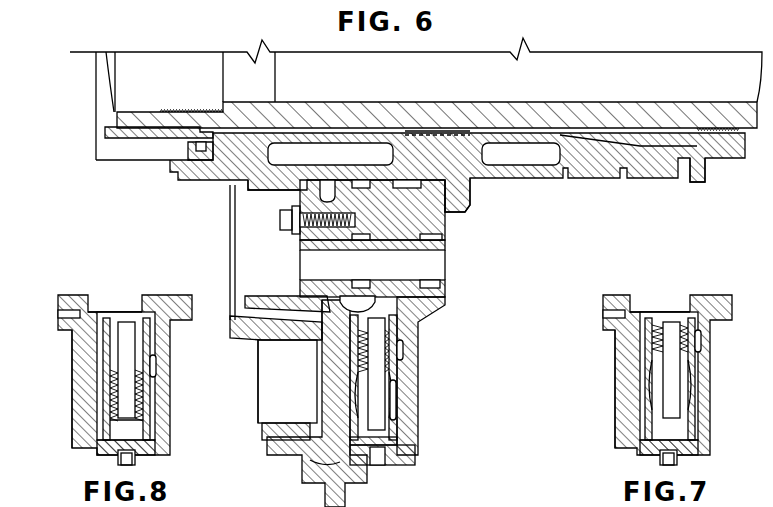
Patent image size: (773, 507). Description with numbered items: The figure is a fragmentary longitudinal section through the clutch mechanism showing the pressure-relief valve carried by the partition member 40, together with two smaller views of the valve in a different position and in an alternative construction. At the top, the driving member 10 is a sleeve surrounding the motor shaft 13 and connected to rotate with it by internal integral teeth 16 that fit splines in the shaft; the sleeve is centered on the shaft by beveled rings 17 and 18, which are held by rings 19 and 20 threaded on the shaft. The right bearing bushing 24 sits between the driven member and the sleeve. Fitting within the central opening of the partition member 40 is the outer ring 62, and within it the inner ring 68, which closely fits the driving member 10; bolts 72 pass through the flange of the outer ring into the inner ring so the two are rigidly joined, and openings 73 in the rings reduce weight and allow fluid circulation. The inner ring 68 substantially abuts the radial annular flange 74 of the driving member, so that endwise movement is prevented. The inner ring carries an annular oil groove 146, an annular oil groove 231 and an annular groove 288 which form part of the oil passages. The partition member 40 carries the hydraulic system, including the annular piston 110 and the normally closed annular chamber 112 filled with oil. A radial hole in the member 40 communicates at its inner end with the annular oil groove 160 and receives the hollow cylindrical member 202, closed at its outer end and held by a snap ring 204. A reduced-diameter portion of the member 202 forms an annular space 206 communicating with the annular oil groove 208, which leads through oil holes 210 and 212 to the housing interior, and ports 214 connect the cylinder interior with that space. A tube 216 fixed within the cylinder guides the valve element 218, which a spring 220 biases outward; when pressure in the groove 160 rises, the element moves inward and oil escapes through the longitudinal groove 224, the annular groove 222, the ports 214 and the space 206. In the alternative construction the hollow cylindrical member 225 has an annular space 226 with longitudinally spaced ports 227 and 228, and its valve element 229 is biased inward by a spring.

In FIG. 6, the driving member 10 is at (512, 178).
In FIG. 6, the shaft 13 is at (555, 116).
In FIG. 6, the internal integral teeth 16 is at (440, 130).
In FIG. 6, the beveled ring 17 is at (660, 160).
In FIG. 6, the beveled ring 18 is at (205, 164).
In FIG. 6, the ring 19 is at (706, 168).
In FIG. 6, the ring 20 is at (172, 135).
In FIG. 6, the bearing bushing 24 is at (278, 190).
In FIG. 6, the partition member 40 is at (418, 385).
In FIG. 8, the partition member 40 is at (168, 397).
In FIG. 7, the partition member 40 is at (667, 375).
In FIG. 6, the outer ring 62 is at (445, 287).
In FIG. 6, the inner ring 68 is at (445, 225).
In FIG. 6, the bolts 72 is at (302, 237).
In FIG. 6, the openings 73 is at (445, 262).
In FIG. 6, the radial annular flange 74 is at (470, 200).
In FIG. 6, the piston 110 is at (262, 421).
In FIG. 6, the annular chamber 112 is at (287, 381).
In FIG. 6, the annular oil groove 146 is at (420, 172).
In FIG. 6, the annular oil groove 160 is at (372, 297).
In FIG. 8, the annular oil groove 160 is at (120, 300).
In FIG. 7, the annular oil groove 160 is at (660, 300).
In FIG. 6, the hollow cylindrical member 202 is at (402, 440).
In FIG. 6, the snap ring 204 is at (405, 452).
In FIG. 6, the annular space 206 is at (398, 380).
In FIG. 7, the annular space 206 is at (700, 385).
In FIG. 6, the annular oil groove 208 is at (403, 348).
In FIG. 8, the annular oil groove 208 is at (100, 348).
In FIG. 7, the annular oil groove 208 is at (645, 365).
In FIG. 6, the oil hole 210 is at (335, 330).
In FIG. 8, the oil hole 210 is at (80, 332).
In FIG. 7, the oil hole 210 is at (635, 328).
In FIG. 6, the oil hole 212 is at (262, 312).
In FIG. 8, the oil hole 212 is at (62, 313).
In FIG. 7, the oil hole 212 is at (610, 314).
In FIG. 6, the ports 214 is at (356, 376).
In FIG. 7, the ports 214 is at (650, 378).
In FIG. 6, the tube 216 is at (396, 400).
In FIG. 7, the tube 216 is at (700, 355).
In FIG. 6, the valve element 218 is at (400, 420).
In FIG. 7, the valve element 218 is at (700, 410).
In FIG. 6, the spring 220 is at (395, 340).
In FIG. 7, the spring 220 is at (690, 338).
In FIG. 6, the annular groove 222 is at (366, 406).
In FIG. 7, the annular groove 222 is at (658, 400).
In FIG. 6, the longitudinal groove 224 is at (353, 425).
In FIG. 7, the longitudinal groove 224 is at (655, 425).
In FIG. 8, the hollow cylindrical member 225 is at (146, 417).
In FIG. 8, the annular space 226 is at (157, 367).
In FIG. 8, the port 227 is at (108, 380).
In FIG. 8, the port 228 is at (152, 352).
In FIG. 8, the valve element 229 is at (110, 407).
In FIG. 6, the annular oil groove 231 is at (362, 180).
In FIG. 6, the annular groove 288 is at (330, 154).